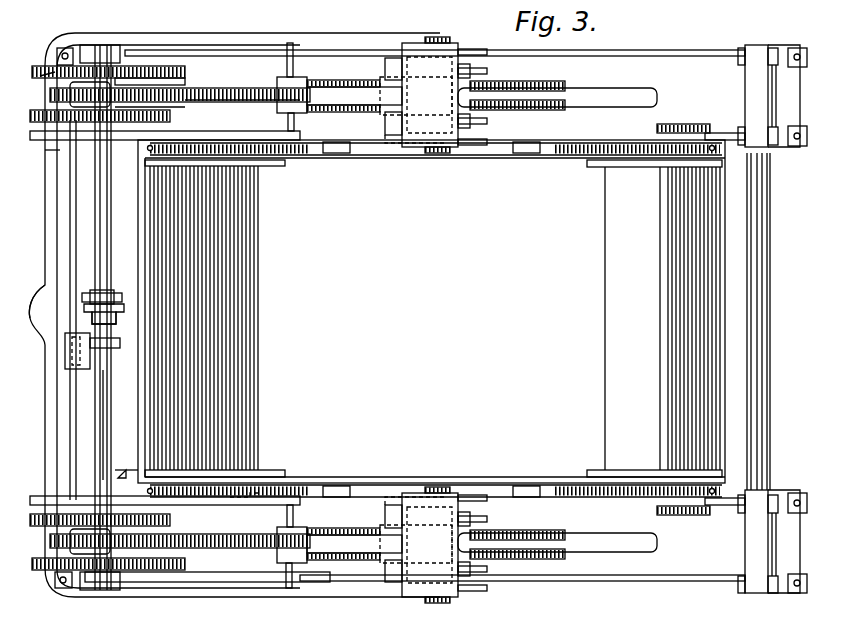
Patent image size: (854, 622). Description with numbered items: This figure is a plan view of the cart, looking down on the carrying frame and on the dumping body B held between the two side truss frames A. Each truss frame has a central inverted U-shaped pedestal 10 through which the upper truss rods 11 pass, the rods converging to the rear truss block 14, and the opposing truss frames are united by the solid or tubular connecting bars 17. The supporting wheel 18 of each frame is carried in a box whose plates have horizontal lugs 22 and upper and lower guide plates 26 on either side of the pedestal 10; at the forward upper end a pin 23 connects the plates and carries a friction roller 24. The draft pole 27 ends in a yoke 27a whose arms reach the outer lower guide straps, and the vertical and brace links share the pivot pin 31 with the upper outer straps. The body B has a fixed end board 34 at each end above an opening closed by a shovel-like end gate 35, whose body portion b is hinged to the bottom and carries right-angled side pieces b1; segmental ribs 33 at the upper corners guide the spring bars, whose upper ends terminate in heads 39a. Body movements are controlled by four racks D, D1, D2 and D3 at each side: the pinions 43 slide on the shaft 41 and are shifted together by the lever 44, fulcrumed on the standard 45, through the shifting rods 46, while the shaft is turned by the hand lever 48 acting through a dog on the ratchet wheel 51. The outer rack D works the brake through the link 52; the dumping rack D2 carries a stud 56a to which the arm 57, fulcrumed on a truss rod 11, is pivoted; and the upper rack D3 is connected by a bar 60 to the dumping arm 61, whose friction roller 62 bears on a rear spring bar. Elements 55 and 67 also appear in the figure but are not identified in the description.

The yoke 27a is at (300, 34).
The pole 27 is at (36, 310).
The upper truss rods 11 is at (615, 51).
The outer rack D is at (136, 315).
The rack D1 is at (353, 313).
The dumping rack D2 is at (96, 310).
The fourth rack D3 is at (79, 318).
The bar 55 is at (145, 82).
The pinions 43 is at (108, 520).
The link 52 is at (39, 329).
The stud 56a is at (165, 112).
The arm 57 is at (242, 110).
The pivot pin 31 is at (282, 77).
The shifting rods 46 is at (74, 310).
The fixed board or plate 34 is at (752, 339).
The connecting bars 17 is at (768, 341).
The ratchet or toothed wheel 51 is at (88, 292).
The standard 45 is at (109, 309).
The hand lever 48 is at (114, 322).
The shifting lever 44 is at (88, 341).
The shaft 41 is at (105, 420).
The pedestal 10 is at (419, 320).
The horizontal lugs 22 is at (480, 71).
The guide plates 26 is at (478, 53).
The supporting wheels 18 is at (522, 83).
The friction roller 24 is at (385, 70).
The pin 23 is at (385, 570).
The bar 60 is at (392, 313).
The segmental rib 33 is at (290, 156).
The horizontal extension or head 39a is at (340, 154).
The body B is at (431, 311).
The body portion b is at (205, 266).
The side pieces b1 is at (278, 167).
The friction rollers 62 is at (672, 318).
The end gates 35 is at (248, 320).
The truss frame a is at (126, 472).
The dumping arm 61 is at (695, 124).
The link 67 is at (245, 501).
The rear truss block 14 is at (772, 319).